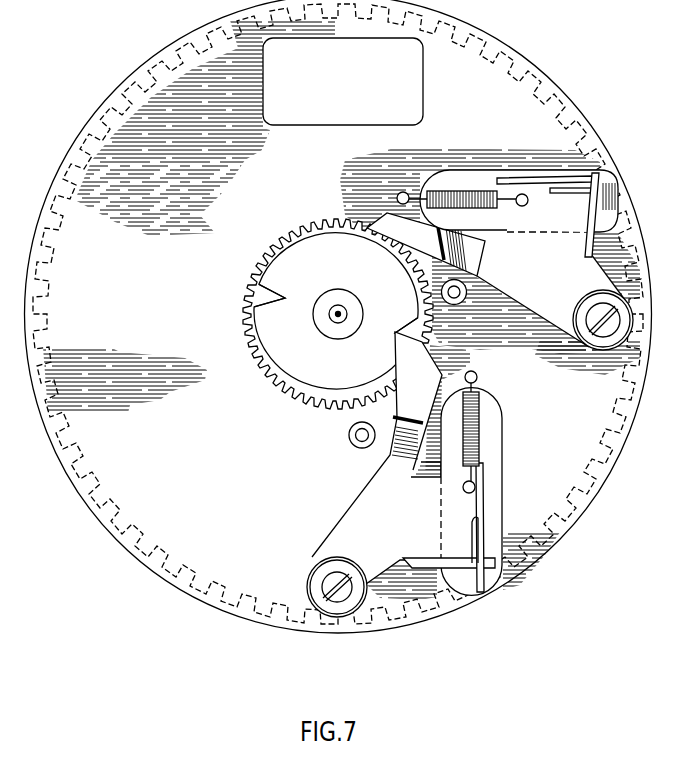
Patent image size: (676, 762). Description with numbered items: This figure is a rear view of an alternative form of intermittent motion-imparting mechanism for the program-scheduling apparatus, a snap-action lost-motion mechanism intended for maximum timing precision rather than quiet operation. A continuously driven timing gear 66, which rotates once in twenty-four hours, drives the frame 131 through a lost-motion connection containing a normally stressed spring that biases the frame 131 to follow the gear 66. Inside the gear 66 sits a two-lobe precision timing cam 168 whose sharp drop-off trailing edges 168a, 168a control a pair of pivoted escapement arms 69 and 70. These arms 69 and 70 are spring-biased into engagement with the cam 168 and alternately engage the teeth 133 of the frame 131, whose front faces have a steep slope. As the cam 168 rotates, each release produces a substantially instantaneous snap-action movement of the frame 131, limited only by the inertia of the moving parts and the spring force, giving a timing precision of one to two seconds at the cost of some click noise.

The gear 66 is at (290, 234).
The cam 168 is at (278, 366).
The sharp drop-off trailing edges 168a is at (252, 308).
The escapement arm 69 is at (533, 296).
The escapement arm 70 is at (353, 508).
The teeth 133 is at (90, 468).
The frame 131 is at (590, 512).